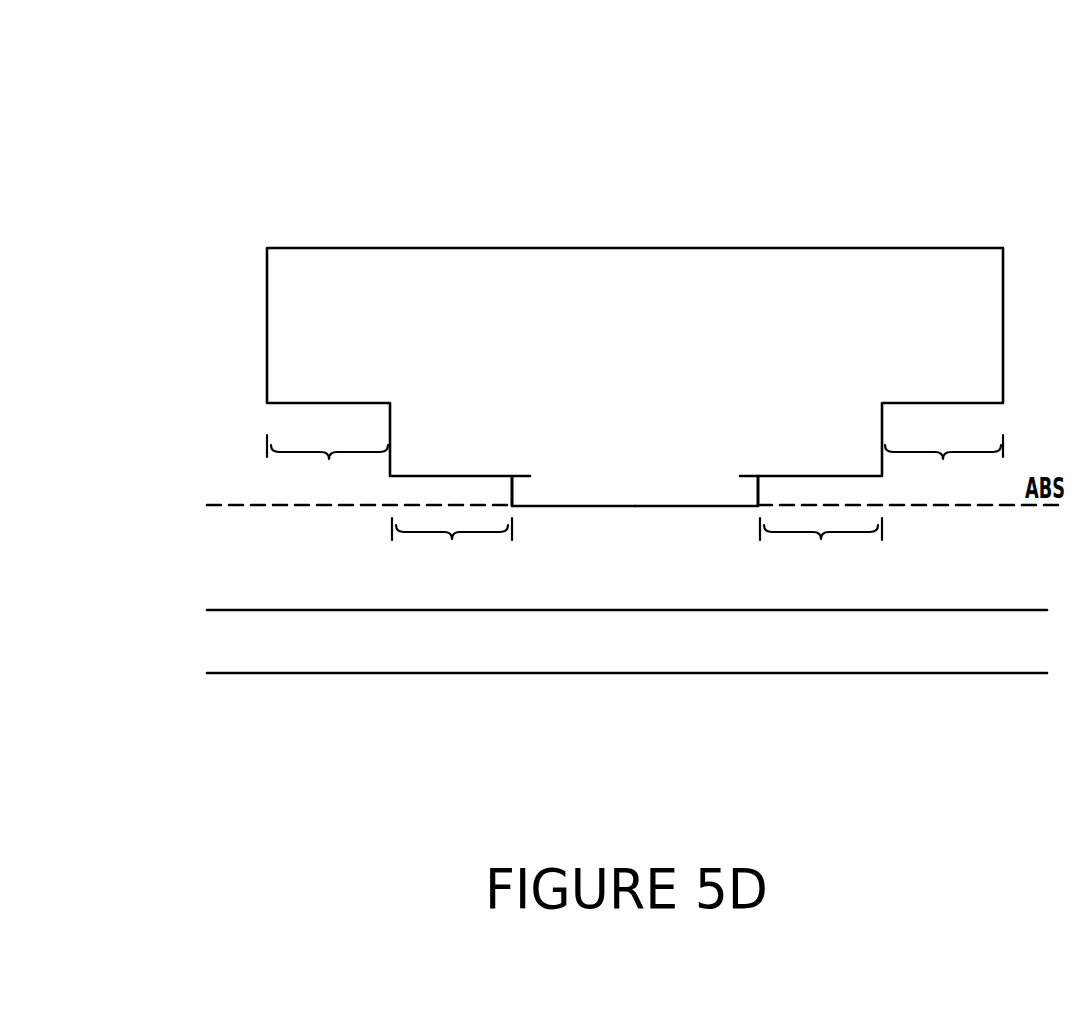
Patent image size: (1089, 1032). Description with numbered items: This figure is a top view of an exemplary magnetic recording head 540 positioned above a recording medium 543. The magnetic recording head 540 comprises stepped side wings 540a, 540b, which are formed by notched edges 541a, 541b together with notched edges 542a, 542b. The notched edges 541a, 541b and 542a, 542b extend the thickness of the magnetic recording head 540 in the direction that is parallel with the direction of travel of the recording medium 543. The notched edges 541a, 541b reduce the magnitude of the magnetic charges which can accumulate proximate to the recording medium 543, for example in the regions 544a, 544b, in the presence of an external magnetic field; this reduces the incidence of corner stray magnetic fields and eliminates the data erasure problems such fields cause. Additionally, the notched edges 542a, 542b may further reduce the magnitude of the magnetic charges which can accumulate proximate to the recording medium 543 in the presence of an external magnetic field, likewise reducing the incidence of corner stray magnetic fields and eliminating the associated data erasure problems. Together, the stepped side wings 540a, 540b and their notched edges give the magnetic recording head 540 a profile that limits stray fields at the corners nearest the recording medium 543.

The magnetic recording head 540 is at (139, 63).
The stepped side wing 540a is at (308, 278).
The stepped side wing 540b is at (941, 278).
The notched edge 541a is at (452, 549).
The notched edge 541b is at (821, 552).
The notched edge 542a is at (327, 468).
The notched edge 542b is at (944, 468).
The recording medium 543 is at (627, 641).
The region 544a is at (513, 497).
The region 544b is at (757, 497).